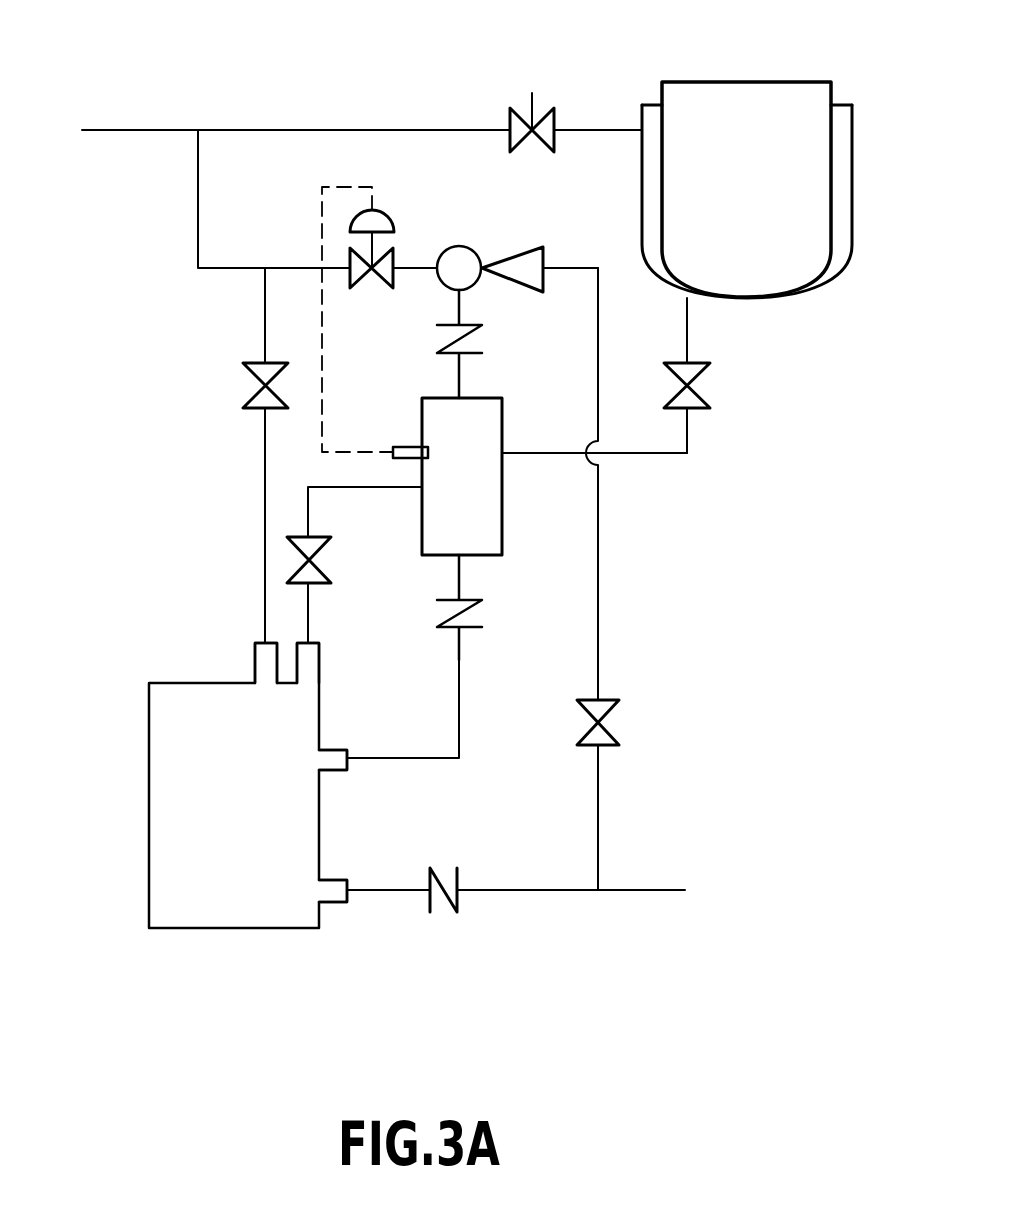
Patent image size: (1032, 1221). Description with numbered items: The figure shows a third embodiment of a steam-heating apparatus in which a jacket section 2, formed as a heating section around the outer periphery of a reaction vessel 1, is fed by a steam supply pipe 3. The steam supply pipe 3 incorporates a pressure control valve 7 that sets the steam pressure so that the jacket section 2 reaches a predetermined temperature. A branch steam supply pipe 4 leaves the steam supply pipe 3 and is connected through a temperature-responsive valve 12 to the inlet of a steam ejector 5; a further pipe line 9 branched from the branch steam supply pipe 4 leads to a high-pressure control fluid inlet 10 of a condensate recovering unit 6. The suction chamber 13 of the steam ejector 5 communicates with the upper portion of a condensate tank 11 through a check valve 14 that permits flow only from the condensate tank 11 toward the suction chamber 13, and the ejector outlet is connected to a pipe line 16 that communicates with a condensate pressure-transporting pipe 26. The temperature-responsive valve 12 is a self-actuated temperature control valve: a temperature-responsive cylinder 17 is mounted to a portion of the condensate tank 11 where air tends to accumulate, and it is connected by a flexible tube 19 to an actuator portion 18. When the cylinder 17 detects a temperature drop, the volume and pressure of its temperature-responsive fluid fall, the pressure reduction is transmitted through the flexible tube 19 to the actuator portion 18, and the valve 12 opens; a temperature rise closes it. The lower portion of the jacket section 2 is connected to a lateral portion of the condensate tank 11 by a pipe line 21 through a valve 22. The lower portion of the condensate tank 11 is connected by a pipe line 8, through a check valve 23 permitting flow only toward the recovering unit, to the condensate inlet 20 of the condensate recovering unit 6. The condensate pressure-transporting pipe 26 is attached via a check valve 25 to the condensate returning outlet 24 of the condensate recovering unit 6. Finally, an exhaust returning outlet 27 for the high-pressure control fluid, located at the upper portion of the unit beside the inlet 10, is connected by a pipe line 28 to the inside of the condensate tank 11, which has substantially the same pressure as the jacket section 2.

The reaction vessel 1 is at (752, 96).
The jacket section 2 is at (843, 205).
The steam supply pipe 3 is at (148, 128).
The branch steam supply pipe 4 is at (197, 197).
The steam ejector 5 is at (507, 303).
The condensate recovering unit 6 is at (113, 803).
The pressure control valve 7 is at (506, 128).
The pipe line 8 is at (459, 742).
The pipe line 9 is at (265, 487).
The high-pressure control fluid inlet 10 is at (263, 662).
The condensate tank 11 is at (504, 530).
The temperature-responsive valve 12 is at (362, 285).
The suction chamber 13 is at (448, 245).
The check valve 14 is at (448, 350).
The pipe line 16 is at (600, 590).
The temperature-responsive cylinder 17 is at (410, 445).
The actuator portion 18 is at (388, 213).
The flexible tube 19 is at (321, 238).
The condensate inlet 20 is at (335, 763).
The pipe line 21 is at (688, 327).
The valve 22 is at (700, 412).
The check valve 23 is at (470, 628).
The condensate returning outlet 24 is at (335, 900).
The check valve 25 is at (458, 905).
The condensate pressure-transporting pipe 26 is at (650, 888).
The exhaust returning outlet 27 is at (313, 662).
The pipe line 28 is at (358, 487).